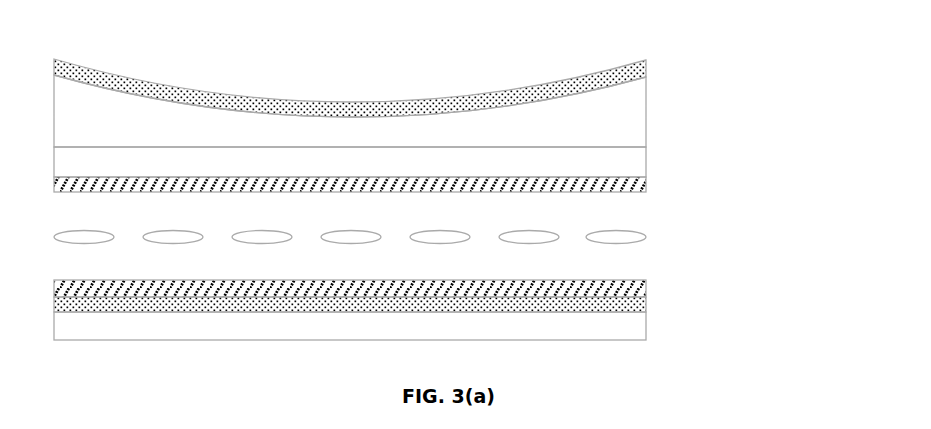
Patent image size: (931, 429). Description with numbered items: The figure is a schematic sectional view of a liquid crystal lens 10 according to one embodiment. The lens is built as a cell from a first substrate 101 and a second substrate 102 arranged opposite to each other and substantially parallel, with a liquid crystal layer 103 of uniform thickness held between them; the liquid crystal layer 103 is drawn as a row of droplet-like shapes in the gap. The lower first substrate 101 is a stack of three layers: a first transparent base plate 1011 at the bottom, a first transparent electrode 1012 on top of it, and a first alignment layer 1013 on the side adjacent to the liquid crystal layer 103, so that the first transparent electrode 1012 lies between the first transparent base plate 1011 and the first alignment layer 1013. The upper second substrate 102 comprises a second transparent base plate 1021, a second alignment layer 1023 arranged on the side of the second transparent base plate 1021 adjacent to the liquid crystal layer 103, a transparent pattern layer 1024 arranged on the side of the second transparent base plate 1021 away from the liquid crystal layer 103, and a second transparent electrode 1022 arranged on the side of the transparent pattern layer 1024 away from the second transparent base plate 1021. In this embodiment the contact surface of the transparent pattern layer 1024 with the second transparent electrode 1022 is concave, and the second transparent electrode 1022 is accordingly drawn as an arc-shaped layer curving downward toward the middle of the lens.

The liquid crystal lens 10 is at (320, 55).
The second substrate 102 is at (762, 62).
The second transparent electrode 1022 is at (646, 68).
The transparent pattern layer 1024 is at (646, 109).
The second transparent base plate 1021 is at (646, 158).
The second alignment layer 1023 is at (646, 182).
The liquid crystal layer 103 is at (632, 233).
The first substrate 101 is at (762, 278).
The first alignment layer 1013 is at (646, 286).
The first transparent electrode 1012 is at (646, 307).
The first transparent base plate 1011 is at (646, 328).